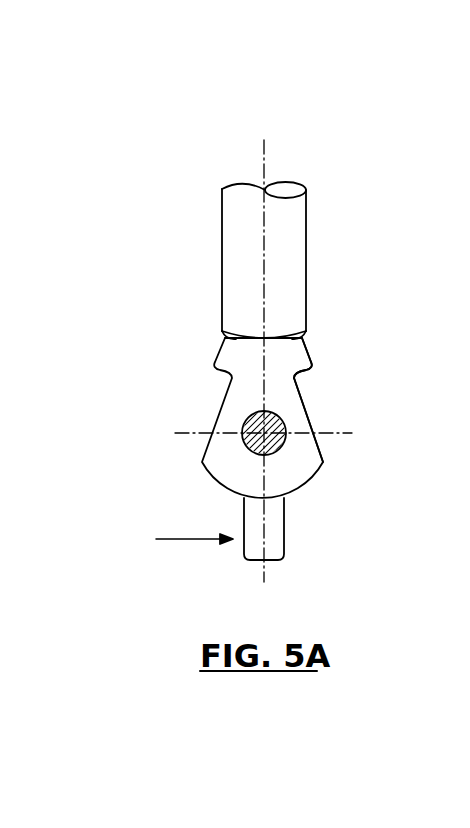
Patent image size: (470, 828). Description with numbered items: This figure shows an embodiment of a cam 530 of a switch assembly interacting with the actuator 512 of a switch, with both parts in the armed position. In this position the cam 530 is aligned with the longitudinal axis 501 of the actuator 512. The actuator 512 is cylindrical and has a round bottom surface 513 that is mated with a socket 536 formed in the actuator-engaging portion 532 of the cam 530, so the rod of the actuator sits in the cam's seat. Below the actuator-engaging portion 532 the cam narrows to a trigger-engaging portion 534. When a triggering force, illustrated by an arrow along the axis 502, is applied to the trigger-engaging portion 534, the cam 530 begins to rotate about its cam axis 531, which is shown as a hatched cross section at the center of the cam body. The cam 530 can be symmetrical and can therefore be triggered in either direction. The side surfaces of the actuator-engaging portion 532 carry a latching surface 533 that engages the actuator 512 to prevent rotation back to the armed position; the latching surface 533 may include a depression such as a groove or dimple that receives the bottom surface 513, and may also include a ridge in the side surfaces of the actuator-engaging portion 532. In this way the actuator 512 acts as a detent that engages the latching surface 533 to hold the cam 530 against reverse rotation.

The longitudinal axis 501 is at (263, 155).
The axis 502 is at (340, 433).
The actuator 512 is at (222, 232).
The round bottom surface 513 is at (296, 340).
The socket 536 is at (250, 337).
The cam 530 is at (200, 418).
The latching surface 533 is at (309, 362).
The actuator-engaging portion 532 is at (306, 412).
The cam axis 531 is at (281, 448).
The trigger-engaging portion 534 is at (285, 538).